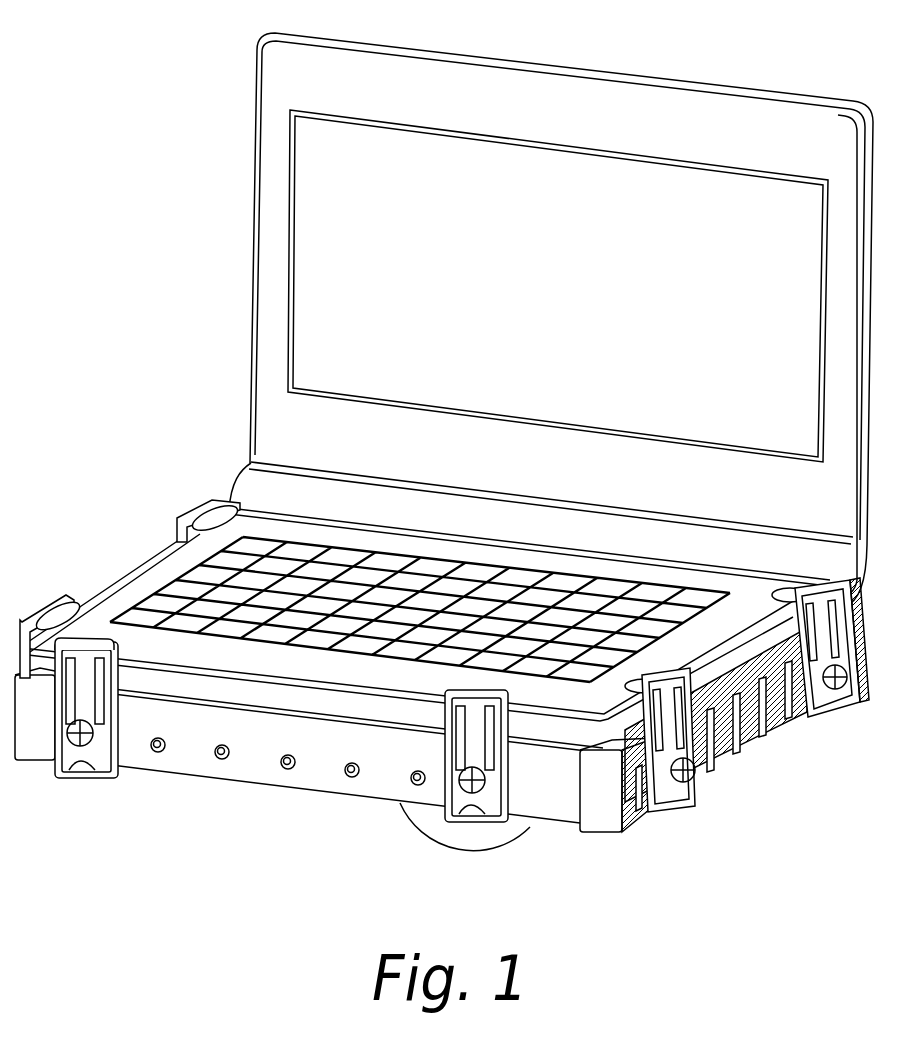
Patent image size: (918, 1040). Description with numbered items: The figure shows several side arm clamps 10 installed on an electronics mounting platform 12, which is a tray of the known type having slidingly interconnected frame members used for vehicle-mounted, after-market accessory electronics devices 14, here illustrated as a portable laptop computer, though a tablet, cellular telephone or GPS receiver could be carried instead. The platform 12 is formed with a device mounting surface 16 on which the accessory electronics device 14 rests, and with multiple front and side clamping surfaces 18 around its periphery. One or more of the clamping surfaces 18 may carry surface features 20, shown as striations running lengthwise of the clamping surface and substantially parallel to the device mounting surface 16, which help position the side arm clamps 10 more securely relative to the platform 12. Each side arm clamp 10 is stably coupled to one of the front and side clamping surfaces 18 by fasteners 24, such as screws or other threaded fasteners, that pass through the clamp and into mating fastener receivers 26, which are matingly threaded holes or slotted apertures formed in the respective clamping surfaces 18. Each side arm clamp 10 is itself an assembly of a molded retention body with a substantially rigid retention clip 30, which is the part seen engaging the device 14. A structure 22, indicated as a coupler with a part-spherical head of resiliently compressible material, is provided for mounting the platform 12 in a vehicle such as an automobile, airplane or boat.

The side arm clamp 10 is at (200, 510).
The electronics mounting platform 12 is at (600, 832).
The accessory electronics device 14 is at (250, 384).
The device mounting surface 16 is at (178, 692).
The front and side clamping surfaces 18 is at (345, 761).
The surface features 20 is at (782, 722).
The structure for mounting the platform 22 is at (480, 848).
The fasteners 24 is at (58, 763).
The fastener receivers 26 is at (156, 753).
The retention clip 30 is at (220, 512).